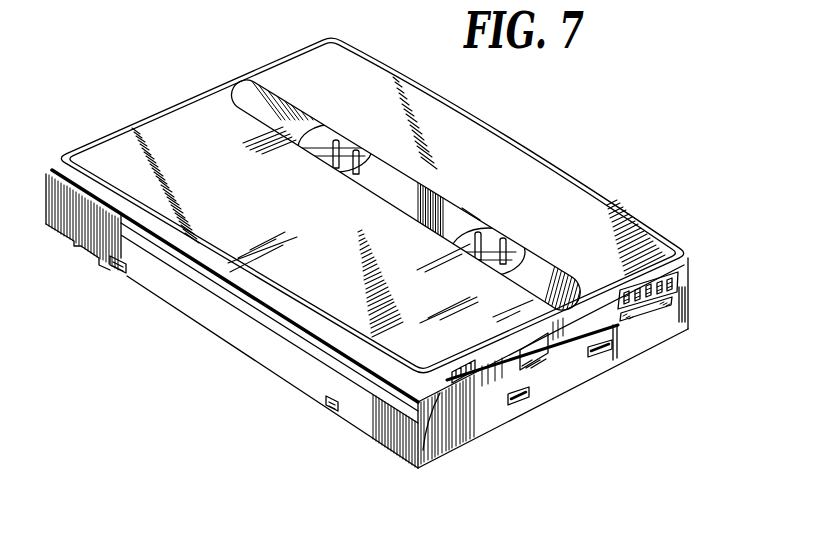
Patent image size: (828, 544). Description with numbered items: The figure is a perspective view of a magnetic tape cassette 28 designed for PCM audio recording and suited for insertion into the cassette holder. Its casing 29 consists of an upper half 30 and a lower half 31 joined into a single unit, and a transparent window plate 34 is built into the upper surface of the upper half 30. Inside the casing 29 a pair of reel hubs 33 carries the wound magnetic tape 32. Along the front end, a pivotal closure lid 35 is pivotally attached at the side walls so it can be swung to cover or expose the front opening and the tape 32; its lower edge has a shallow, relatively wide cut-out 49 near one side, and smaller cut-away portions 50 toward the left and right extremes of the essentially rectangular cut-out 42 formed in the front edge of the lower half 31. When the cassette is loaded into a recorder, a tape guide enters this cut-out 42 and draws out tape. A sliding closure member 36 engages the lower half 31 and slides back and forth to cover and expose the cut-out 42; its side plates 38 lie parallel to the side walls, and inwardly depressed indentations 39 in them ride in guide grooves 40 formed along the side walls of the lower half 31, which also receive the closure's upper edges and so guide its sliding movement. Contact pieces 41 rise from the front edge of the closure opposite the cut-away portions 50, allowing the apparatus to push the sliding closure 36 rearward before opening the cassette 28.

The magnetic tape cassette 28 is at (469, 116).
The casing 29 is at (602, 192).
The upper half 30 is at (296, 58).
The lower half 31 is at (647, 330).
The magnetic tape 32 is at (416, 182).
The reel hubs 33 is at (344, 146).
The transparent window plate 34 is at (240, 96).
The pivotal closure lid 35 is at (205, 316).
The sliding closure member 36 is at (461, 435).
The side plates 38 is at (551, 382).
The indentations 39 is at (523, 402).
The guide grooves 40 is at (626, 332).
The contact pieces 41 is at (117, 272).
The cut-out 42 is at (462, 208).
The cut-out 49 is at (88, 245).
The cut-away portions 50 is at (122, 258).